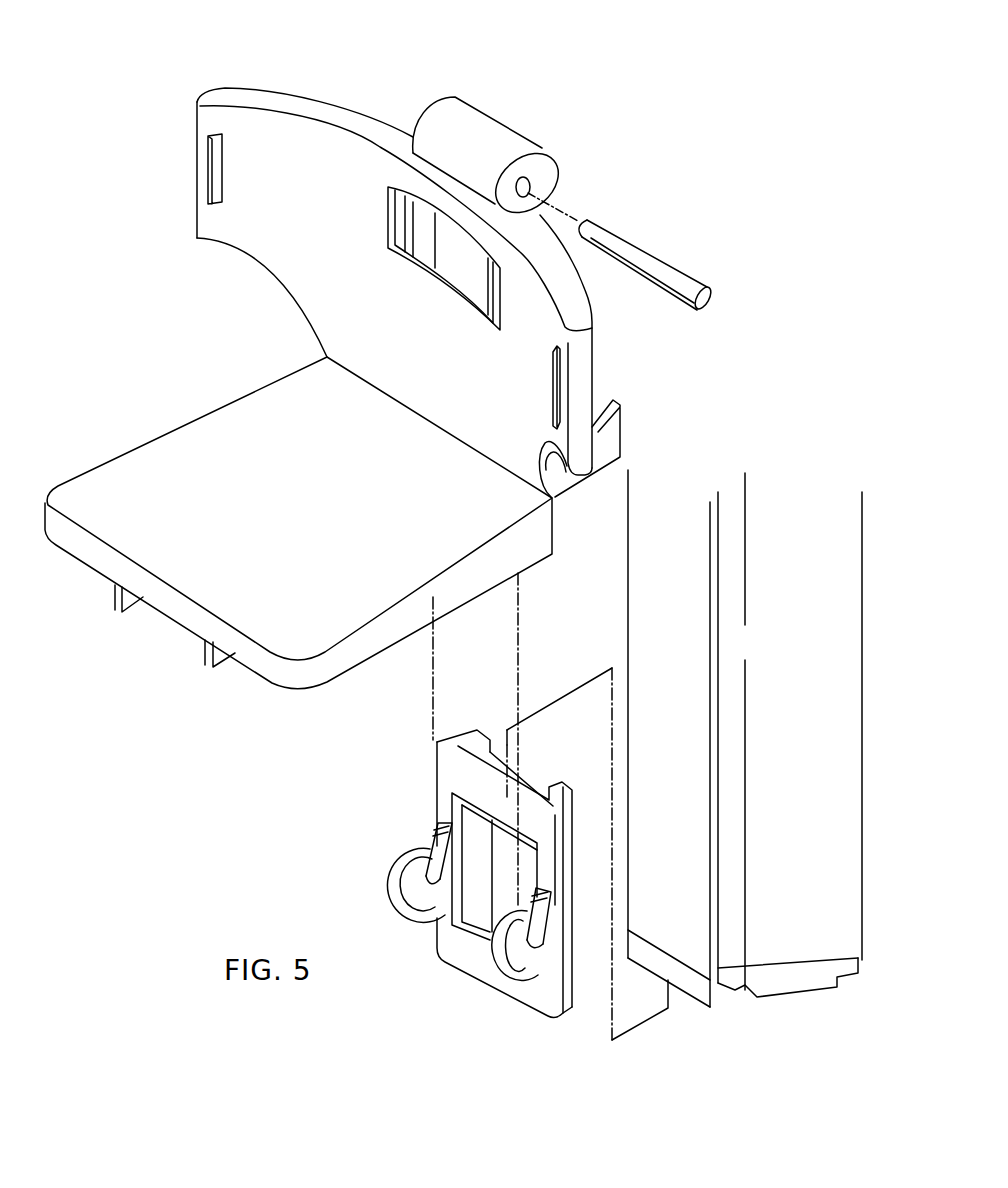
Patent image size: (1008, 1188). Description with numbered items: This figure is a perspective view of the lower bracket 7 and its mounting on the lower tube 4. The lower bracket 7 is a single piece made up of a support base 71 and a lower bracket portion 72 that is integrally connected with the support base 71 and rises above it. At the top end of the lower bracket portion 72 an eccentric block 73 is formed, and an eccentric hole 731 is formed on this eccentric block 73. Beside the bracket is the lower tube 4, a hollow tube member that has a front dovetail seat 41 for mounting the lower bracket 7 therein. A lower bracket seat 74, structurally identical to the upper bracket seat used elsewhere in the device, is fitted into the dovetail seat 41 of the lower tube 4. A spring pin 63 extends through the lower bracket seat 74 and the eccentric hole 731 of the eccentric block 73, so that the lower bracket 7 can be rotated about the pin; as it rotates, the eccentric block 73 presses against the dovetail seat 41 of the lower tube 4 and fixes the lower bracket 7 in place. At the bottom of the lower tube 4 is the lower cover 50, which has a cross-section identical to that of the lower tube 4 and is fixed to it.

The lower bracket 7 is at (381, 104).
The lower bracket portion 72 is at (252, 89).
The support base 71 is at (332, 666).
The eccentric block 73 is at (485, 118).
The eccentric hole 731 is at (555, 165).
The spring pin 63 is at (631, 243).
The front dovetail seat 41 is at (647, 586).
The lower tube 4 is at (852, 600).
The lower cover 50 is at (853, 968).
The lower bracket seat 74 is at (463, 1000).